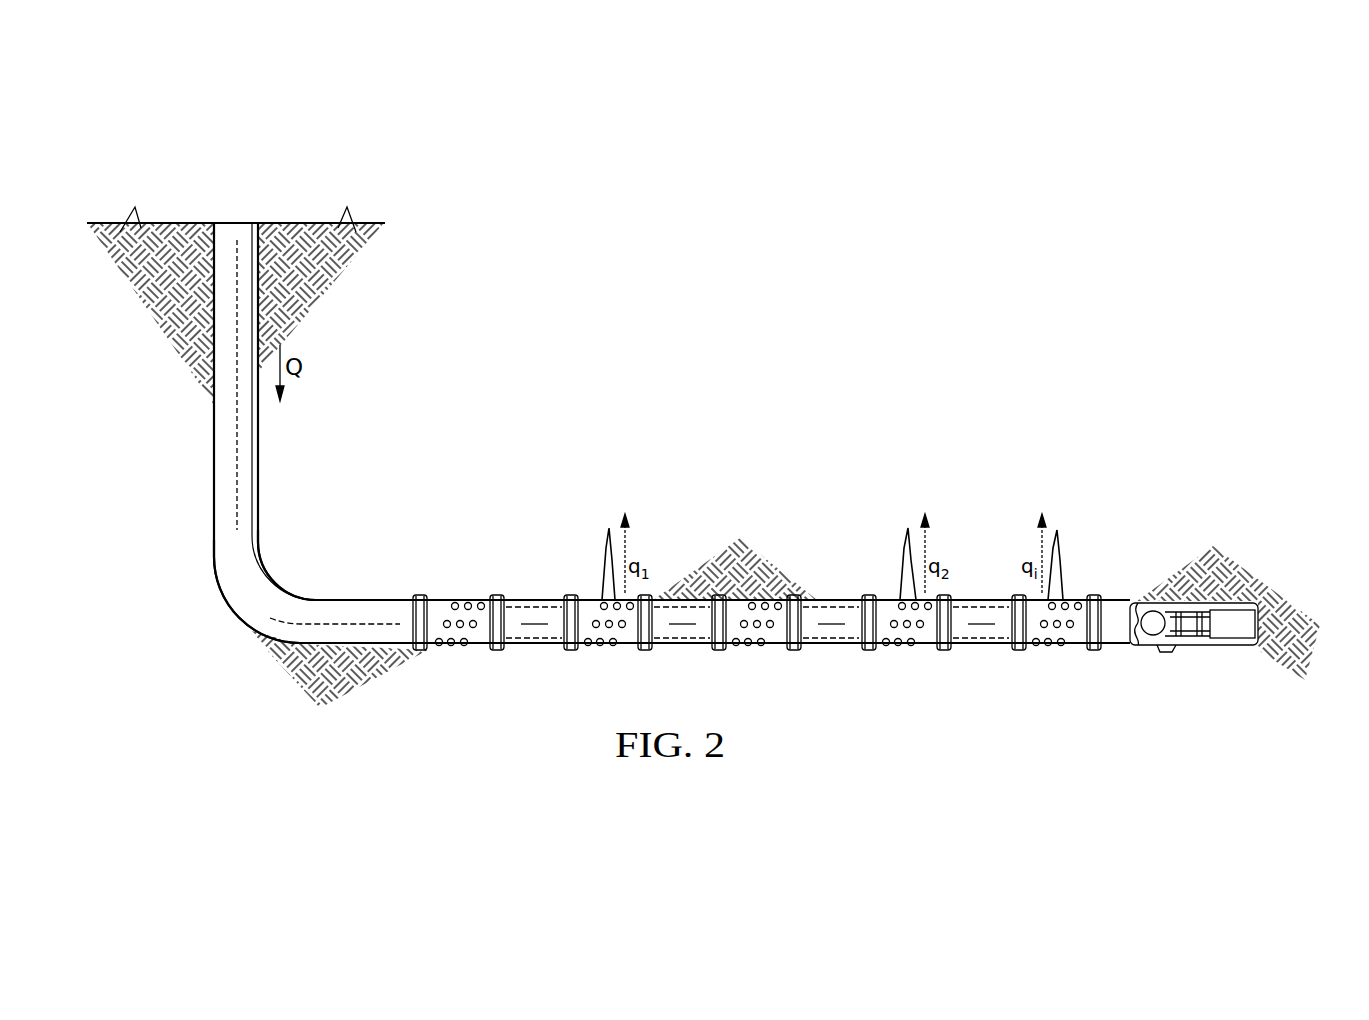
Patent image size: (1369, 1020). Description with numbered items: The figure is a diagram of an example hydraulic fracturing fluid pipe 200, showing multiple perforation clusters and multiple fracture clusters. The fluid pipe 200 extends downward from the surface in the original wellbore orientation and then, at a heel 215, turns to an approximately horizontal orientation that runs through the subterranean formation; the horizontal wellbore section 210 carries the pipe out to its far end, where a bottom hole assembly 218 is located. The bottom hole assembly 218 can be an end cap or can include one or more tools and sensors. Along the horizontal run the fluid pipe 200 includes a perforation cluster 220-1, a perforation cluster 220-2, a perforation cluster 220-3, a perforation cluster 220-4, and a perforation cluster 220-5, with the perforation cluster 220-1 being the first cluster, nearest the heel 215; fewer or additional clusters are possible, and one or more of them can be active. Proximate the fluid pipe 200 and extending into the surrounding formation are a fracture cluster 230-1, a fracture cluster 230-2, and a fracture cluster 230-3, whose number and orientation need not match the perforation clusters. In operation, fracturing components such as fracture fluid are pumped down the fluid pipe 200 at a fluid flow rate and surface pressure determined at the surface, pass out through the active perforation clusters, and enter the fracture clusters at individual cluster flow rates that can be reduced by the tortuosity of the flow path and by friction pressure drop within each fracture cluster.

The HF fluid pipe 200 is at (136, 160).
The wellbore 210 is at (380, 599).
The heel 215 is at (244, 616).
The bottom hole assembly 218 is at (1224, 630).
The perforation cluster 220-1 is at (462, 650).
The perforation cluster 220-2 is at (613, 650).
The perforation cluster 220-3 is at (756, 650).
The perforation cluster 220-4 is at (902, 650).
The perforation cluster 220-5 is at (1058, 650).
The fracture cluster 230-1 is at (604, 568).
The fracture cluster 230-2 is at (901, 568).
The fracture cluster 230-3 is at (1062, 570).